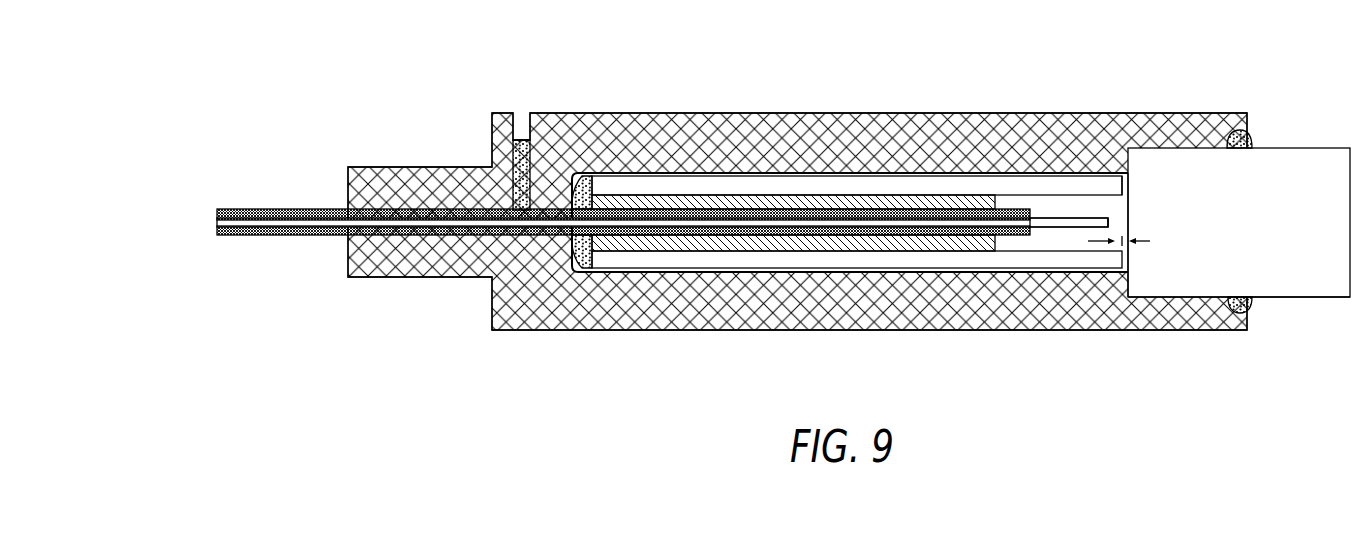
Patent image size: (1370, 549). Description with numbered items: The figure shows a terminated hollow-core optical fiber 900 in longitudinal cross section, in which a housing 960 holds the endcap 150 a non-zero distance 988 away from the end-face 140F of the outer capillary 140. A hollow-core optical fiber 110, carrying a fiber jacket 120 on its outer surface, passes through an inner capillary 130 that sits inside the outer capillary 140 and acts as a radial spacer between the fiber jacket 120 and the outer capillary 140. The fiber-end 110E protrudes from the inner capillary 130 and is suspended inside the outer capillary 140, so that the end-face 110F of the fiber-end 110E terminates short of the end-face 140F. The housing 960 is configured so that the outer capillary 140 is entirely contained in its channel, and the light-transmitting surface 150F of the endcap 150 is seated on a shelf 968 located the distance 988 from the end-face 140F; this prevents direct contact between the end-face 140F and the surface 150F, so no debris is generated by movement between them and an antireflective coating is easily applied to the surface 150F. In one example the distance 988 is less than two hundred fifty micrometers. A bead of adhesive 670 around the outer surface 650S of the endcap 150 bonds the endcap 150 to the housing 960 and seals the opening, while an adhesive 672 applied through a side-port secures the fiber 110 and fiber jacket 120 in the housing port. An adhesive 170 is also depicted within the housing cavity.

The terminated hollow-core optical fiber 900 is at (287, 68).
The hollow-core optical fiber 110 is at (214, 221).
The fiber jacket 120 is at (323, 209).
The inner capillary 130 is at (848, 248).
The outer capillary 140 is at (758, 180).
The endcap 150 is at (1318, 232).
The adhesive 170 is at (581, 177).
The adhesive 672 is at (520, 138).
The adhesive 670 is at (1252, 140).
The housing 960 is at (880, 151).
The light-transmitting surface 150F is at (1122, 203).
The end-face of outer capillary 140F is at (1130, 185).
The end-face of fiber-end 110F is at (1111, 222).
The fiber-end 110E is at (1049, 234).
The distance 988 is at (1150, 241).
The shelf 968 is at (1133, 284).
The outer surface of endcap 650S is at (1292, 302).